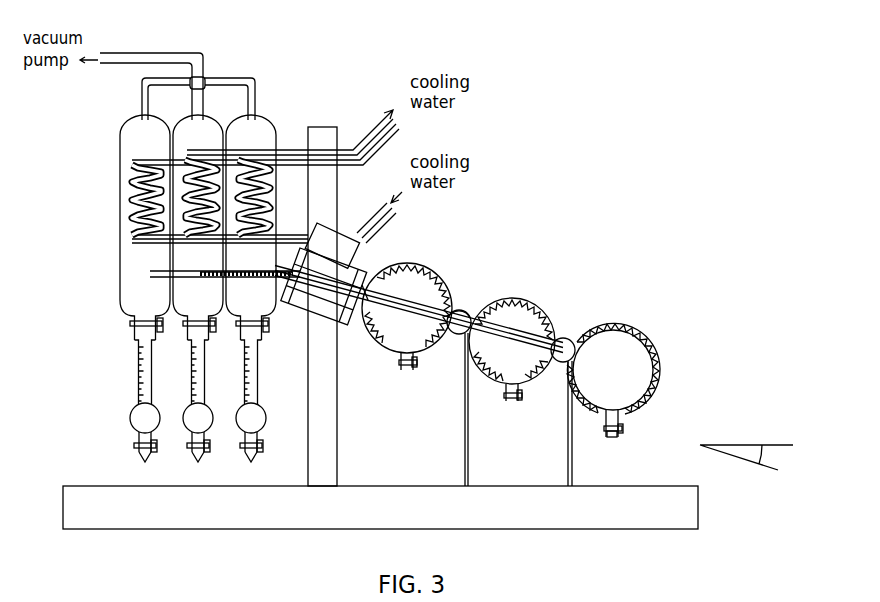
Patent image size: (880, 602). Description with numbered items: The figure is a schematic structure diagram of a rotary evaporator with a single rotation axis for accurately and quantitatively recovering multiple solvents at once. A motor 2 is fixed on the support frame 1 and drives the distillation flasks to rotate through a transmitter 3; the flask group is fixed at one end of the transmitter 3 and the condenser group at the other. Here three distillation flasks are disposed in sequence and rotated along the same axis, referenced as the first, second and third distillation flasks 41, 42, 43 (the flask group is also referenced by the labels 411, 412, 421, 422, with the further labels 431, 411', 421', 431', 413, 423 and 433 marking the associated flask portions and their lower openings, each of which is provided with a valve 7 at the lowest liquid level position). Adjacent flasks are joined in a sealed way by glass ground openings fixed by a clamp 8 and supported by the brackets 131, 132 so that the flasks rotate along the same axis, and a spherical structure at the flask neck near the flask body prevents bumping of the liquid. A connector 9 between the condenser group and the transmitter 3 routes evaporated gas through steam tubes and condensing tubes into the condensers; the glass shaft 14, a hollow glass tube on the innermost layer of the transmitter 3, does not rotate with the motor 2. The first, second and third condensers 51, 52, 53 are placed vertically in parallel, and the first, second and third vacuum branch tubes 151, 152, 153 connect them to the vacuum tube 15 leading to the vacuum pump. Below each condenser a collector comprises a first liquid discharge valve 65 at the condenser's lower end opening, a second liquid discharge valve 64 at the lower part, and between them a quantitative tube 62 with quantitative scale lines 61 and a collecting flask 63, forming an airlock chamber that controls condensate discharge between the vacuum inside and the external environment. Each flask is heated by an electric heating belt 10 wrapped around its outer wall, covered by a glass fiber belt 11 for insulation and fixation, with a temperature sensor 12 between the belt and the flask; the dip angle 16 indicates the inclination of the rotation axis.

The support frame 1 is at (311, 431).
The motor 2 is at (336, 233).
The transmitter 3 is at (308, 308).
The valve 7 is at (404, 366).
The clamp 8 is at (469, 305).
The connector 9 is at (296, 256).
The electric heating belt 10 is at (660, 367).
The glass fiber belt 11 is at (661, 387).
The temperature sensor 12 is at (387, 278).
The glass shaft 14 is at (307, 248).
The vacuum tube 15 is at (152, 52).
The dip angle 16 is at (760, 447).
The first distillation flask 41 is at (440, 281).
The second distillation flask 42 is at (523, 313).
The third distillation flask 43 is at (630, 350).
The first condenser 51 is at (260, 133).
The second condenser 52 is at (204, 133).
The third condenser 53 is at (149, 133).
The quantitative scale lines 61 is at (137, 349).
The quantitative tube 62 is at (137, 371).
The collecting flask 63 is at (137, 416).
The second liquid discharge valve 64 is at (137, 448).
The first liquid discharge valve 65 is at (133, 324).
The bracket 131 is at (465, 442).
The bracket 132 is at (568, 447).
The first vacuum branch tube 151 is at (256, 95).
The second vacuum branch tube 152 is at (200, 82).
The third vacuum branch tube 153 is at (143, 87).
The first distillation flask 411 is at (396, 253).
The first flask jacket section 411' is at (363, 343).
The second distillation flask 412 is at (465, 308).
The first flask discharge port 413 is at (410, 372).
The first distillation flask 421 is at (167, 300).
The second flask jacket section 421' is at (463, 362).
The second distillation flask 422 is at (566, 334).
The second flask discharge port 423 is at (511, 402).
The third feed tube 431 is at (179, 290).
The third flask jacket section 431' is at (563, 390).
The third flask discharge port 433 is at (614, 438).